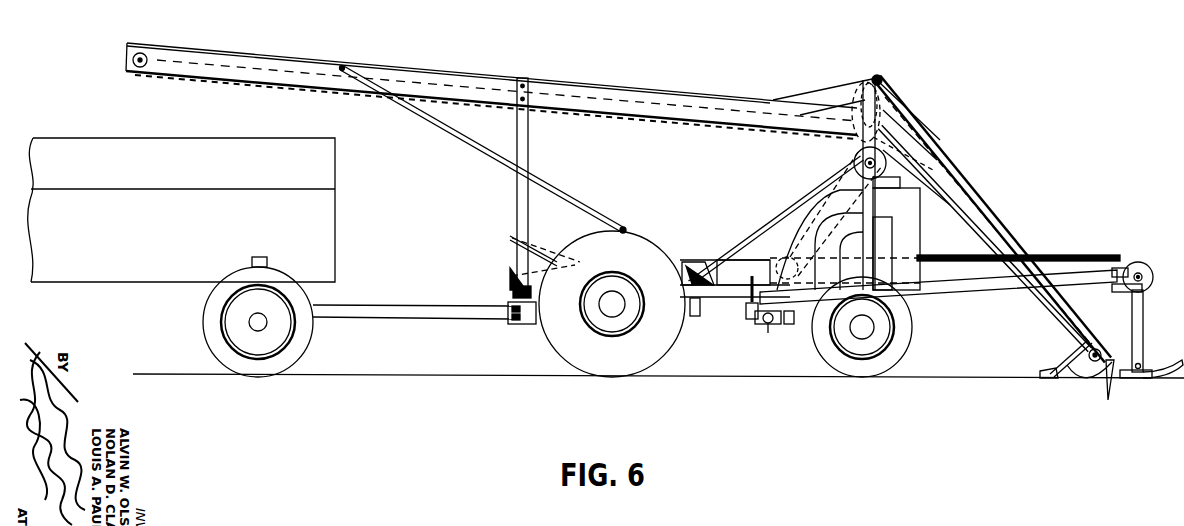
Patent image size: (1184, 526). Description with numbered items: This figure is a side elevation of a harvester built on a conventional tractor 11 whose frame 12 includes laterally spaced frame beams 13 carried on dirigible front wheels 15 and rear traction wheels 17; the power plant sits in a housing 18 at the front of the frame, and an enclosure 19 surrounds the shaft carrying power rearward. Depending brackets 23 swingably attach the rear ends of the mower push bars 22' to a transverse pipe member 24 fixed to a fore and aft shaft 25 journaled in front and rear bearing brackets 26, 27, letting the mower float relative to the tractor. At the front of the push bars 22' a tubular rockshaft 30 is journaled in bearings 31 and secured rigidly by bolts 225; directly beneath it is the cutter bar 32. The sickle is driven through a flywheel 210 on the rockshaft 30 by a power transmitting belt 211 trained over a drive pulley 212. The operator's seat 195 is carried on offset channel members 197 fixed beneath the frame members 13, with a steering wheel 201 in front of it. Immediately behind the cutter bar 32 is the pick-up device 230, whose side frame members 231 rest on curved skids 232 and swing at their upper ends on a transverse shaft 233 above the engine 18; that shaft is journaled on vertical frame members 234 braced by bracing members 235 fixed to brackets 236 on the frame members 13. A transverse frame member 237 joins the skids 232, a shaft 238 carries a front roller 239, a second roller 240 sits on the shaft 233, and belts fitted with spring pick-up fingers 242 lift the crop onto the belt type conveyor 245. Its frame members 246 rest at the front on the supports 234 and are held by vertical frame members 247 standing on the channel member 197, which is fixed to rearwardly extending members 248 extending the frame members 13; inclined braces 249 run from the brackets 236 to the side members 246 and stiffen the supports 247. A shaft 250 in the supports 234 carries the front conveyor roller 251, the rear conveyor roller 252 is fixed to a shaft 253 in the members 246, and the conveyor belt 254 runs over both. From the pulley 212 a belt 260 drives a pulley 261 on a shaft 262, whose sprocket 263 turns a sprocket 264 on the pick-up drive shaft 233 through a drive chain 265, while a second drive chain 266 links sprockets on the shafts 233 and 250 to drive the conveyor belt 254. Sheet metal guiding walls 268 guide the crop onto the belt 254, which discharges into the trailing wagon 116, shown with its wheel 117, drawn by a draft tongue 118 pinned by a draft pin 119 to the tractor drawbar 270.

The tractor 11 is at (920, 219).
The frame 12 is at (752, 287).
The frame beams 13 is at (720, 297).
The front wheels 15 is at (870, 370).
The traction wheels 17 is at (630, 370).
The housing 18 is at (905, 209).
The enclosure 19 is at (726, 262).
The push bar 22' is at (938, 299).
The depending brackets 23 is at (768, 333).
The transverse pipe member 24 is at (760, 324).
The fore and aft extending shaft 25 is at (771, 323).
The front bearing bracket 26 is at (790, 325).
The rear bearing bracket 27 is at (752, 319).
The tubular rockshaft 30 is at (1148, 265).
The bearings 31 is at (1118, 267).
The mower cutter bar 32 is at (1140, 380).
The wagon 116 is at (335, 201).
The wagon wheel 117 is at (305, 335).
The draft tongue 118 is at (365, 305).
The draft pin 119 is at (520, 325).
The operator's seat 195 is at (535, 248).
The structural channel members 197 is at (513, 292).
The steering wheel 201 is at (623, 226).
The flywheel 210 is at (1145, 290).
The power transmitting belt 211 is at (1056, 254).
The drive pulley 212 is at (760, 238).
The bolts 225 is at (1139, 270).
The pick-up device 230 is at (1015, 231).
The side frame members 231 is at (958, 197).
The curved shoes or skids 232 is at (1088, 382).
The transverse shaft 233 is at (882, 79).
The vertical frame members 234 is at (880, 256).
The bracing members 235 is at (785, 215).
The supporting plates or brackets 236 is at (690, 262).
The transverse frame member 237 is at (1041, 370).
The shaft 238 is at (1098, 348).
The roller 239 is at (1062, 352).
The second roller 240 is at (871, 80).
The spring pick-up fingers 242 is at (1108, 400).
The conveyor 245 is at (652, 92).
The frame members 246 is at (470, 78).
The vertical frame members 247 is at (528, 137).
The rearwardly extending members 248 is at (512, 274).
The inclined braces 249 is at (565, 193).
The shaft 250 is at (900, 112).
The front conveyor roller 251 is at (820, 95).
The rear conveyor roller 252 is at (160, 58).
The shaft 253 is at (140, 53).
The conveyor belt 254 is at (280, 60).
The belt 260 is at (810, 200).
The pulley 261 is at (928, 155).
The shaft 262 is at (855, 160).
The sprocket 263 is at (917, 142).
The sprocket 264 is at (858, 95).
The drive chain 265 is at (910, 127).
The drive chain 266 is at (895, 95).
The sheet metal guiding walls 268 is at (800, 96).
The drawbar 270 is at (574, 312).